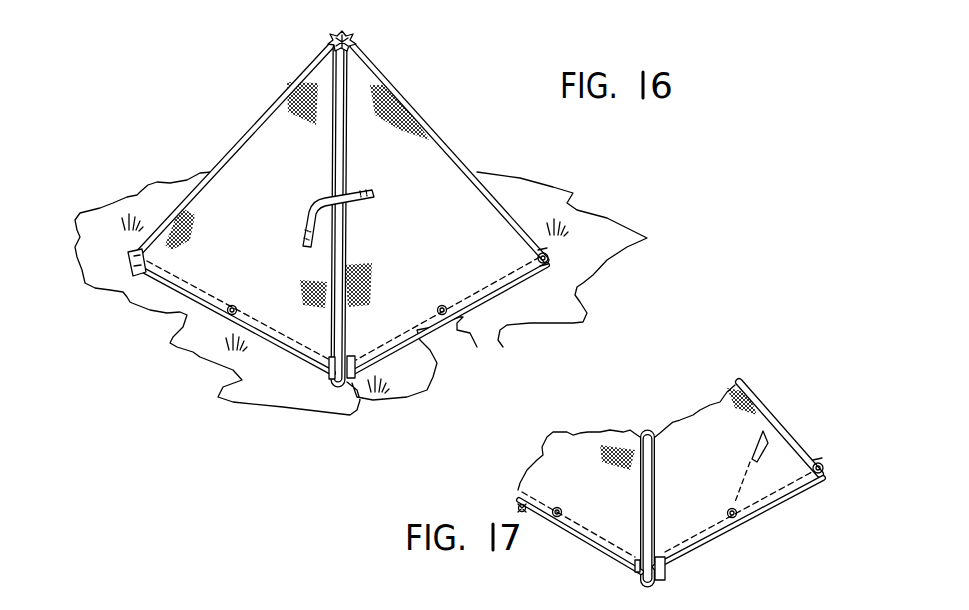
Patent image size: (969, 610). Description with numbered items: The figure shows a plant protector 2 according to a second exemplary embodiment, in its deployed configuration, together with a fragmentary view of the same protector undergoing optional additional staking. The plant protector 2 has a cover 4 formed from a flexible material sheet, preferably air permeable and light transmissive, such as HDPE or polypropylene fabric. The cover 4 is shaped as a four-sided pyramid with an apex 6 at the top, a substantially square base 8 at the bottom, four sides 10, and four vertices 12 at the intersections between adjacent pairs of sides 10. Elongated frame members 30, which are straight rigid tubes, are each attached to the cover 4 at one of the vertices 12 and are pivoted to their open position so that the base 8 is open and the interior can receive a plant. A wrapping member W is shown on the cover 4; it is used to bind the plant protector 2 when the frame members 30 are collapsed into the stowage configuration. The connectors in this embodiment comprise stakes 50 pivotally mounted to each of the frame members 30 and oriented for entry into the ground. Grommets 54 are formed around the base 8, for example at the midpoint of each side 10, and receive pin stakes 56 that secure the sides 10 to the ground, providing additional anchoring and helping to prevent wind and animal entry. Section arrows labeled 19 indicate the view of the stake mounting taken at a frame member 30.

In FIG. 16, the plant protector 2 is at (240, 78).
In FIG. 16, the cover 4 is at (283, 184).
In FIG. 17, the cover 4 is at (582, 442).
In FIG. 16, the apex 6 is at (347, 37).
In FIG. 16, the base 8 is at (185, 308).
In FIG. 17, the base 8 is at (597, 548).
In FIG. 16, the sides 10 is at (217, 160).
In FIG. 17, the sides 10 is at (537, 460).
In FIG. 16, the vertices 12 is at (243, 127).
In FIG. 17, the vertices 12 is at (650, 487).
In FIG. 16, the section view arrows 19 is at (103, 262).
In FIG. 16, the frame members 30 is at (121, 270).
In FIG. 16, the stakes 50 is at (138, 277).
In FIG. 17, the stakes 50 is at (667, 572).
In FIG. 16, the grommets 54 is at (177, 347).
In FIG. 17, the grommets 54 is at (560, 512).
In FIG. 17, the pin stakes 56 is at (528, 508).
In FIG. 16, the wrapping member W is at (307, 229).